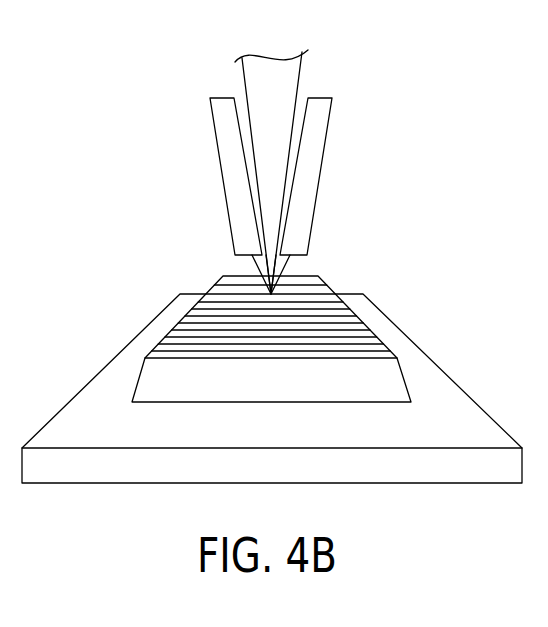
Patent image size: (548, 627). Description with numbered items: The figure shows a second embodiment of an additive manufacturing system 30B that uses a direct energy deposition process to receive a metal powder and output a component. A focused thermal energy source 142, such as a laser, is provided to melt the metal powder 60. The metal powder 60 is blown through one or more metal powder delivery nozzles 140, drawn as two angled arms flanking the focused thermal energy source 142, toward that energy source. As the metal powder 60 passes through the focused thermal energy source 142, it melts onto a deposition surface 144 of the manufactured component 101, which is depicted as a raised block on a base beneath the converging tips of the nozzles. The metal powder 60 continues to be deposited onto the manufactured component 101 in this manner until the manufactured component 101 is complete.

The additive manufacturing system 30B is at (352, 82).
The metal powder delivery nozzles 140 is at (233, 150).
The focused thermal energy source 142 is at (263, 172).
The metal powder 60 is at (258, 268).
The deposition surface 144 is at (277, 288).
The manufactured component 101 is at (212, 322).